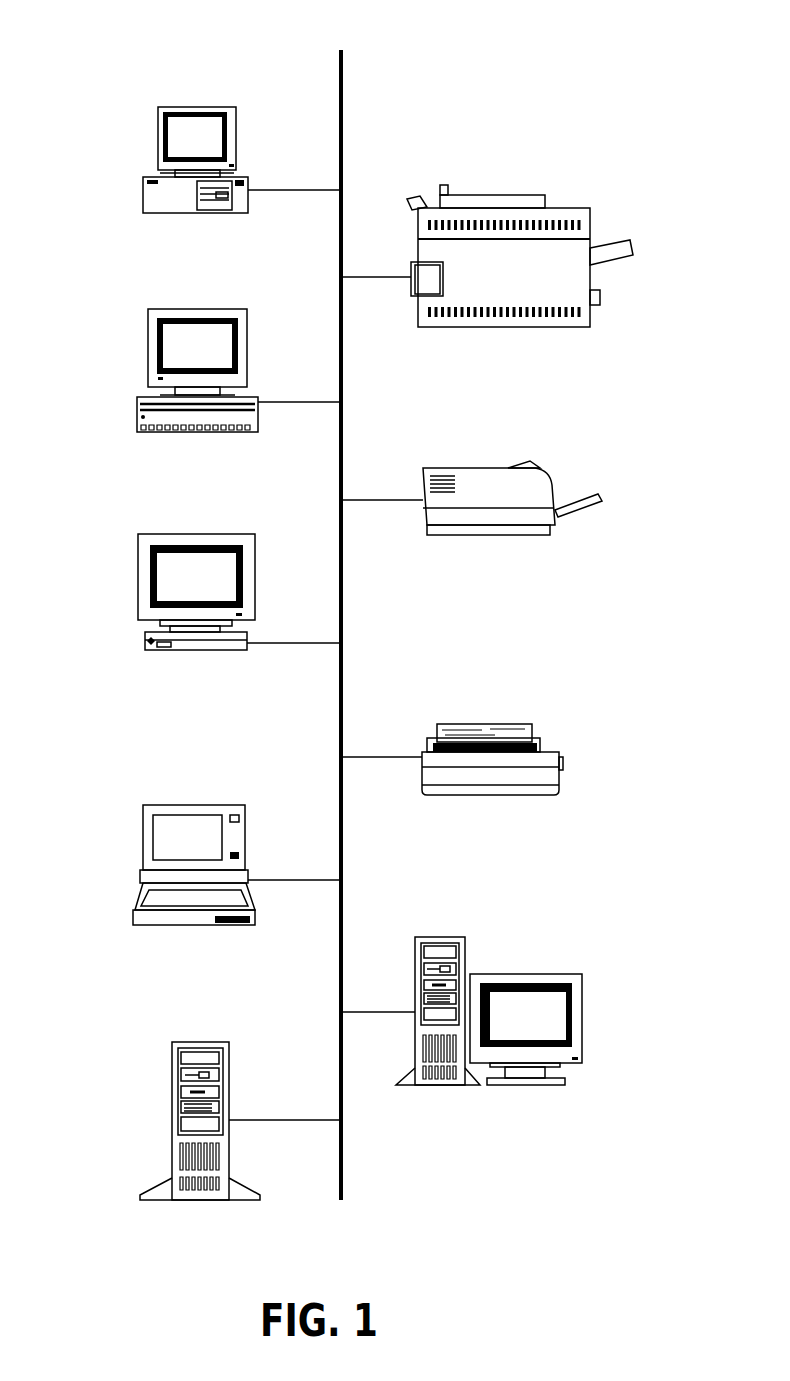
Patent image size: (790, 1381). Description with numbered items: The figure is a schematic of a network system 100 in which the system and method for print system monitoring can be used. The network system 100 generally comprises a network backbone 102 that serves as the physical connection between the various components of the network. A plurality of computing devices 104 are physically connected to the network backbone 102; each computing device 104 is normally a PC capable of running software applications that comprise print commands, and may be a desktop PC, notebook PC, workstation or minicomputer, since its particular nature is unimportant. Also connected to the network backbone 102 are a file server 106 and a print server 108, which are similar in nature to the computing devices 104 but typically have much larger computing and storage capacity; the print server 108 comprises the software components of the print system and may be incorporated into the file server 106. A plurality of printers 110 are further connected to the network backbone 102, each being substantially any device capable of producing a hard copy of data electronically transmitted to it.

The network system 100 is at (537, 52).
The network backbone 102 is at (344, 85).
The computing devices 104 is at (126, 128).
The file server 106 is at (132, 1062).
The print server 108 is at (625, 975).
The printers 110 is at (653, 212).